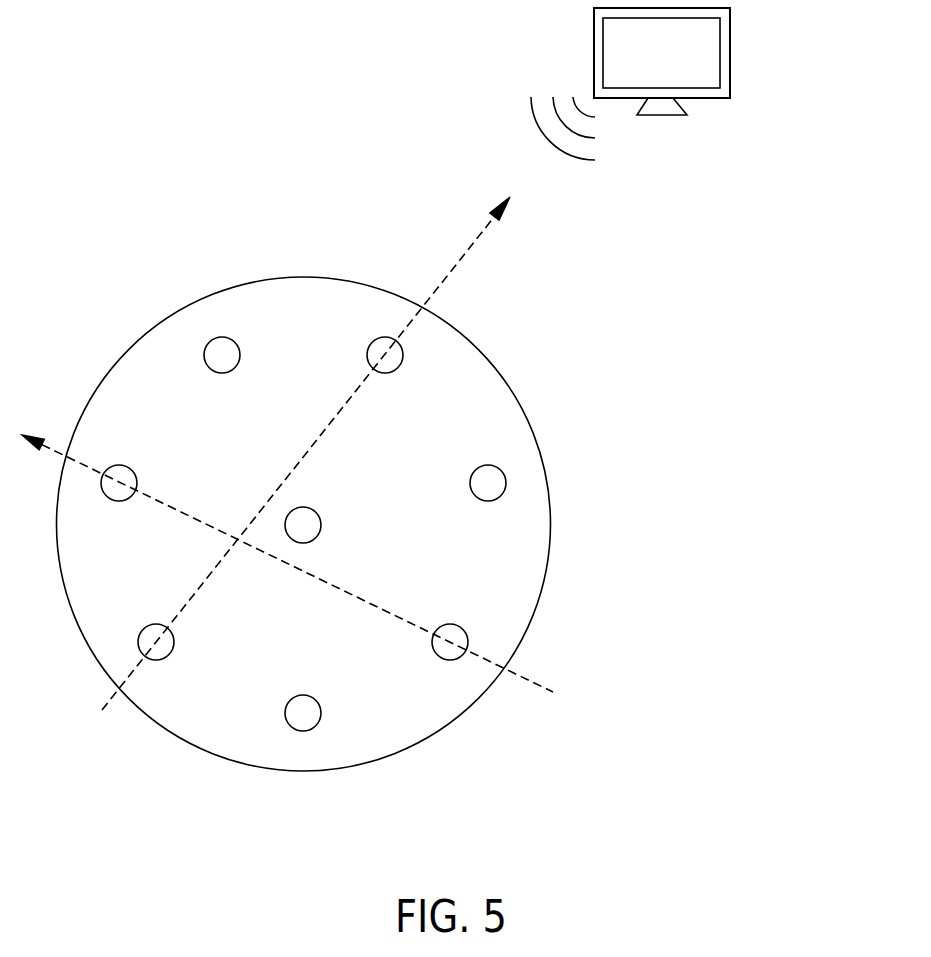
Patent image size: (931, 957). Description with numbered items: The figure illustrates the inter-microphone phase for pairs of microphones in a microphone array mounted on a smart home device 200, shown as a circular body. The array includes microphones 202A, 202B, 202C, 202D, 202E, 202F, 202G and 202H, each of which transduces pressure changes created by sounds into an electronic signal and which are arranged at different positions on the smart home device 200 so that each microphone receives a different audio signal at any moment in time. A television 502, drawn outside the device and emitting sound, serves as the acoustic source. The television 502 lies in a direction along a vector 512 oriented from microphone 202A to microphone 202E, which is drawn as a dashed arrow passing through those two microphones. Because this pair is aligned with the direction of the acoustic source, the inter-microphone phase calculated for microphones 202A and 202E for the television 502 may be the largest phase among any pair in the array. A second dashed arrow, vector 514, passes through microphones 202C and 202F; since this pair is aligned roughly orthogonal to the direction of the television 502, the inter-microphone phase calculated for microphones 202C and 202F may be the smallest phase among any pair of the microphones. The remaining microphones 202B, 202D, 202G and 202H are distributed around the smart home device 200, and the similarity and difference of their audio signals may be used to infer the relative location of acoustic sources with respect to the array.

The television 502 is at (731, 57).
The smart home device 200 is at (528, 415).
The vector 512 is at (480, 235).
The vector 514 is at (525, 680).
The microphone 202A is at (403, 355).
The microphone 202B is at (488, 501).
The microphone 202C is at (450, 624).
The microphone 202D is at (321, 713).
The microphone 202E is at (174, 642).
The microphone 202F is at (137, 483).
The microphone 202G is at (240, 355).
The microphone 202H is at (321, 525).